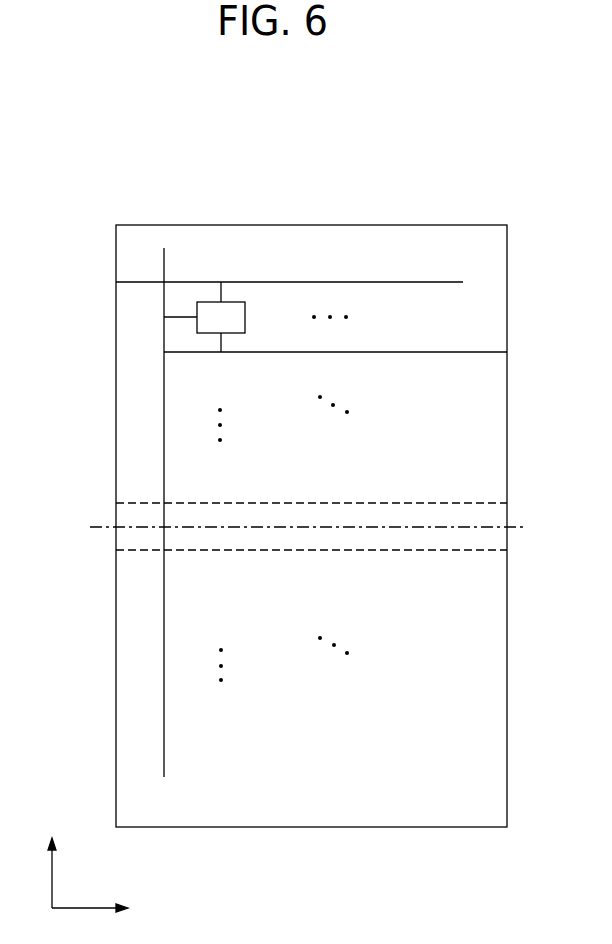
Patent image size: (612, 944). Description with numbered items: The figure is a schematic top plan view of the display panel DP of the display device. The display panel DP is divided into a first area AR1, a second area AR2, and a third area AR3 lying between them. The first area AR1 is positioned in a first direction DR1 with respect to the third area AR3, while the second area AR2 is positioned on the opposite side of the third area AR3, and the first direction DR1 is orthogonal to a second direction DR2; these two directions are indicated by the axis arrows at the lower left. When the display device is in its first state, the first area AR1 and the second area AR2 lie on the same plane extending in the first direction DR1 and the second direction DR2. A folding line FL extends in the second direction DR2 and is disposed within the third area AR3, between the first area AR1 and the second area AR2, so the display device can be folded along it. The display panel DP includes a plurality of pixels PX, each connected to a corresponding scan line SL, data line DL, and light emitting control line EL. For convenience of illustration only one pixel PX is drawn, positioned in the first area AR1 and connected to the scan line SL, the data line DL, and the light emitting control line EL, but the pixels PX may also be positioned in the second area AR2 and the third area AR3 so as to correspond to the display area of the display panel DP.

The display panel DP is at (495, 225).
The data line DL is at (166, 252).
The scan line SL is at (459, 282).
The light emitting control line EL is at (447, 352).
The pixel PX is at (204, 317).
The first area AR1 is at (130, 368).
The second area AR2 is at (130, 644).
The third area AR3 is at (130, 518).
The folding line FL is at (297, 531).
The first direction DR1 is at (53, 861).
The second direction DR2 is at (111, 912).